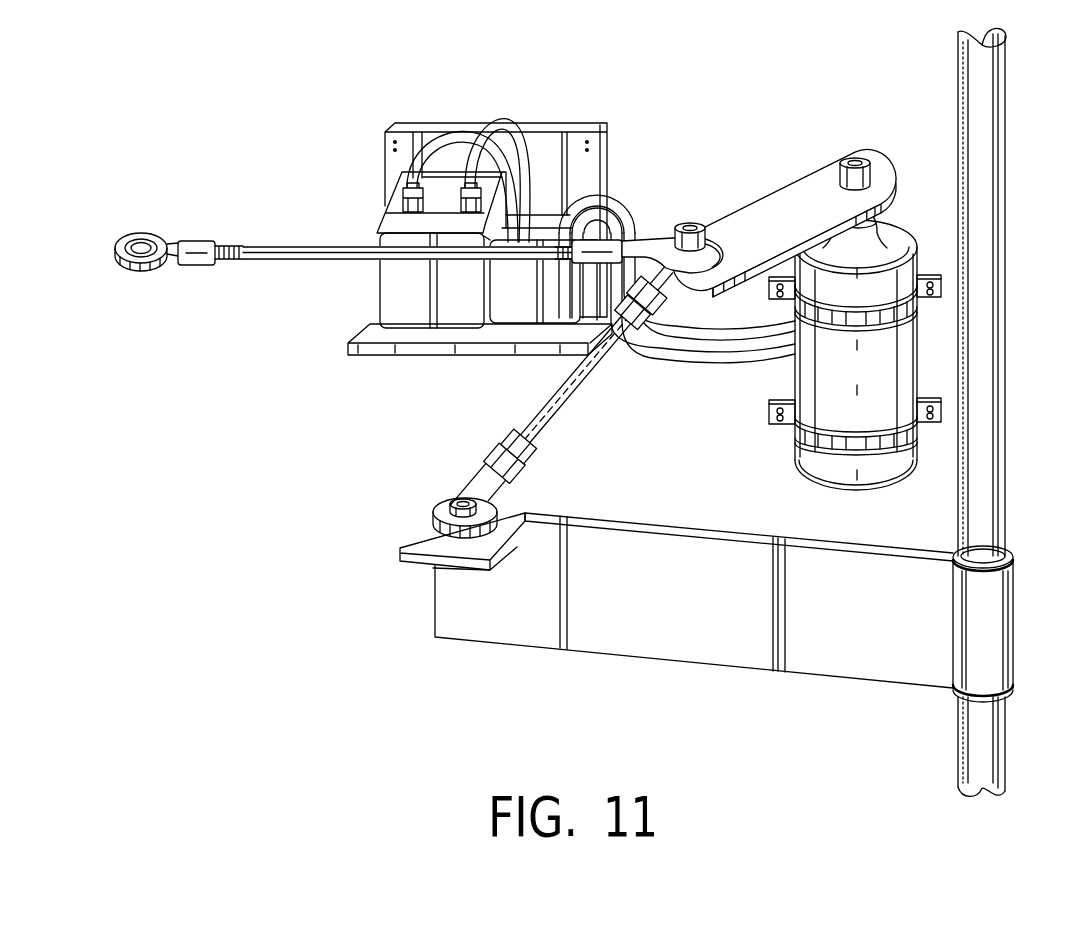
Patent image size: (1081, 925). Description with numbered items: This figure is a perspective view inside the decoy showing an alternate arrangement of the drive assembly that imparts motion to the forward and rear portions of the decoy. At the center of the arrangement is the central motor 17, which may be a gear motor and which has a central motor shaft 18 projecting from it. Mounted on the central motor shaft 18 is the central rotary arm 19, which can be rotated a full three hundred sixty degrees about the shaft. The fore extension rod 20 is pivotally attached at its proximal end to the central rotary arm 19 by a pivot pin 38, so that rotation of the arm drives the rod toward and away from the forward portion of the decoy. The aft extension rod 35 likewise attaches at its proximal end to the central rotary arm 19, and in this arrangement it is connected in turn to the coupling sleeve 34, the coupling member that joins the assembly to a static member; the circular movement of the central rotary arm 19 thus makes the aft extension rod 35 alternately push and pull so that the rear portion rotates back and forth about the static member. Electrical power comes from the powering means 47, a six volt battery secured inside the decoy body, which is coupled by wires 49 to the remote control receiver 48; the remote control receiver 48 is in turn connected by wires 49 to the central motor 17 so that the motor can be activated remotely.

The central motor 17 is at (807, 387).
The central motor shaft 18 is at (853, 158).
The central rotary arm 19 is at (727, 227).
The fore extension rod 20 is at (278, 250).
The coupling member 34 is at (992, 623).
The aft extension rod 35 is at (584, 390).
The pivot pin 38 is at (693, 222).
The powering means 47 is at (455, 312).
The remote control receiver 48 is at (554, 312).
The wires 49 is at (503, 124).